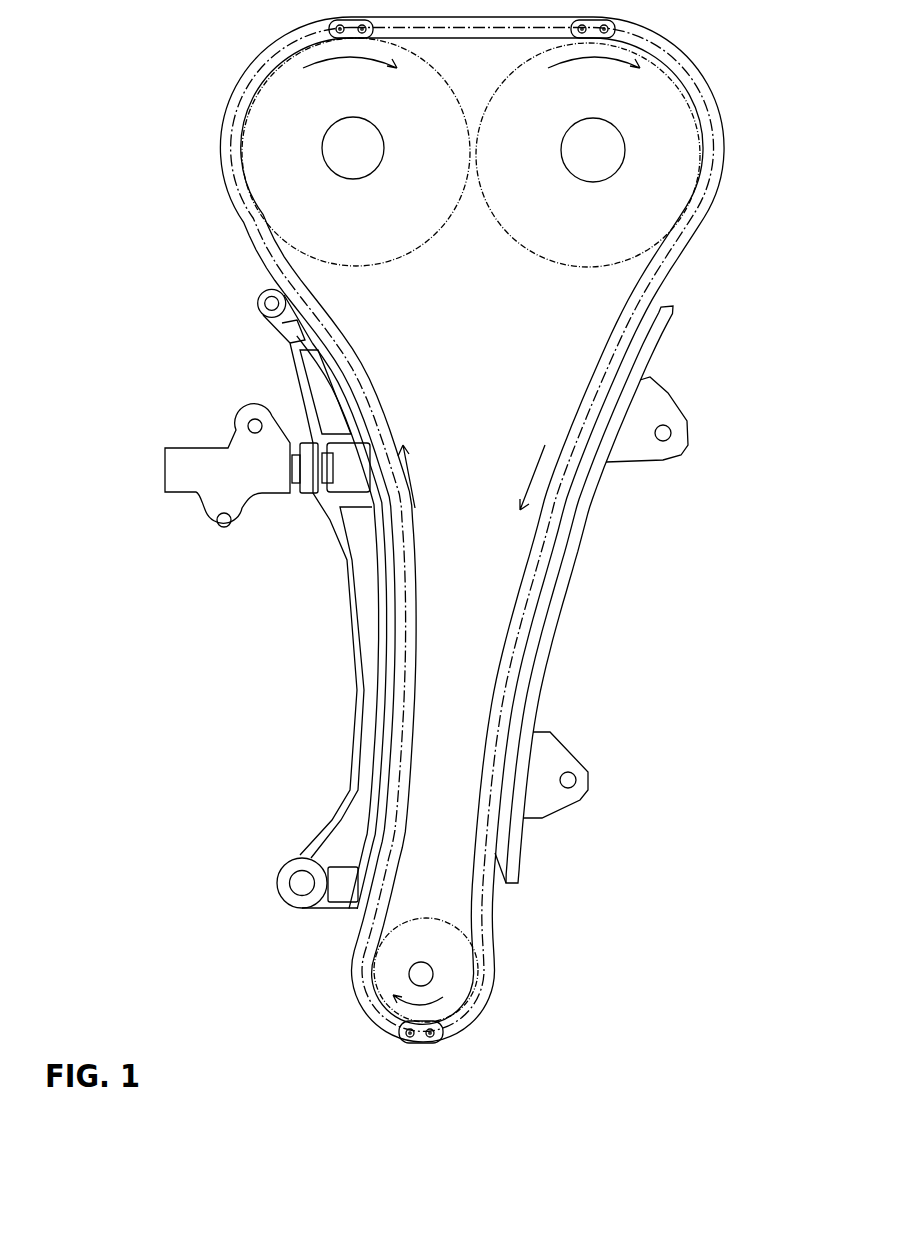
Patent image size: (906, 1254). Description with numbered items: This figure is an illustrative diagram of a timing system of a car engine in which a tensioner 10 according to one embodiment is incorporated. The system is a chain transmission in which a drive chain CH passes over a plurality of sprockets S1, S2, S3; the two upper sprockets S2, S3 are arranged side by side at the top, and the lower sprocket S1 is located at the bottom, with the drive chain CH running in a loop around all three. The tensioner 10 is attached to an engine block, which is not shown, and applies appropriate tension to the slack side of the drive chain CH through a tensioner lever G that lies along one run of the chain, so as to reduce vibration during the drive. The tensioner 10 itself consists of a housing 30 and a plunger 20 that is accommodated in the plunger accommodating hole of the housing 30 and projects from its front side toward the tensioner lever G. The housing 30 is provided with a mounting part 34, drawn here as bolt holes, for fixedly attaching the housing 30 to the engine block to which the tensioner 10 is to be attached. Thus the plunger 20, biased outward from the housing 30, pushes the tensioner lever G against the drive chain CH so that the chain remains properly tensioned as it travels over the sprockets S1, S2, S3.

The tensioner 10 is at (208, 475).
The plunger 20 is at (302, 495).
The housing 30 is at (220, 484).
The mounting part 34 is at (253, 419).
The tensioner lever G is at (362, 780).
The sprocket S1 is at (450, 975).
The sprocket S2 is at (272, 142).
The sprocket S3 is at (657, 133).
The drive chain CH is at (660, 270).